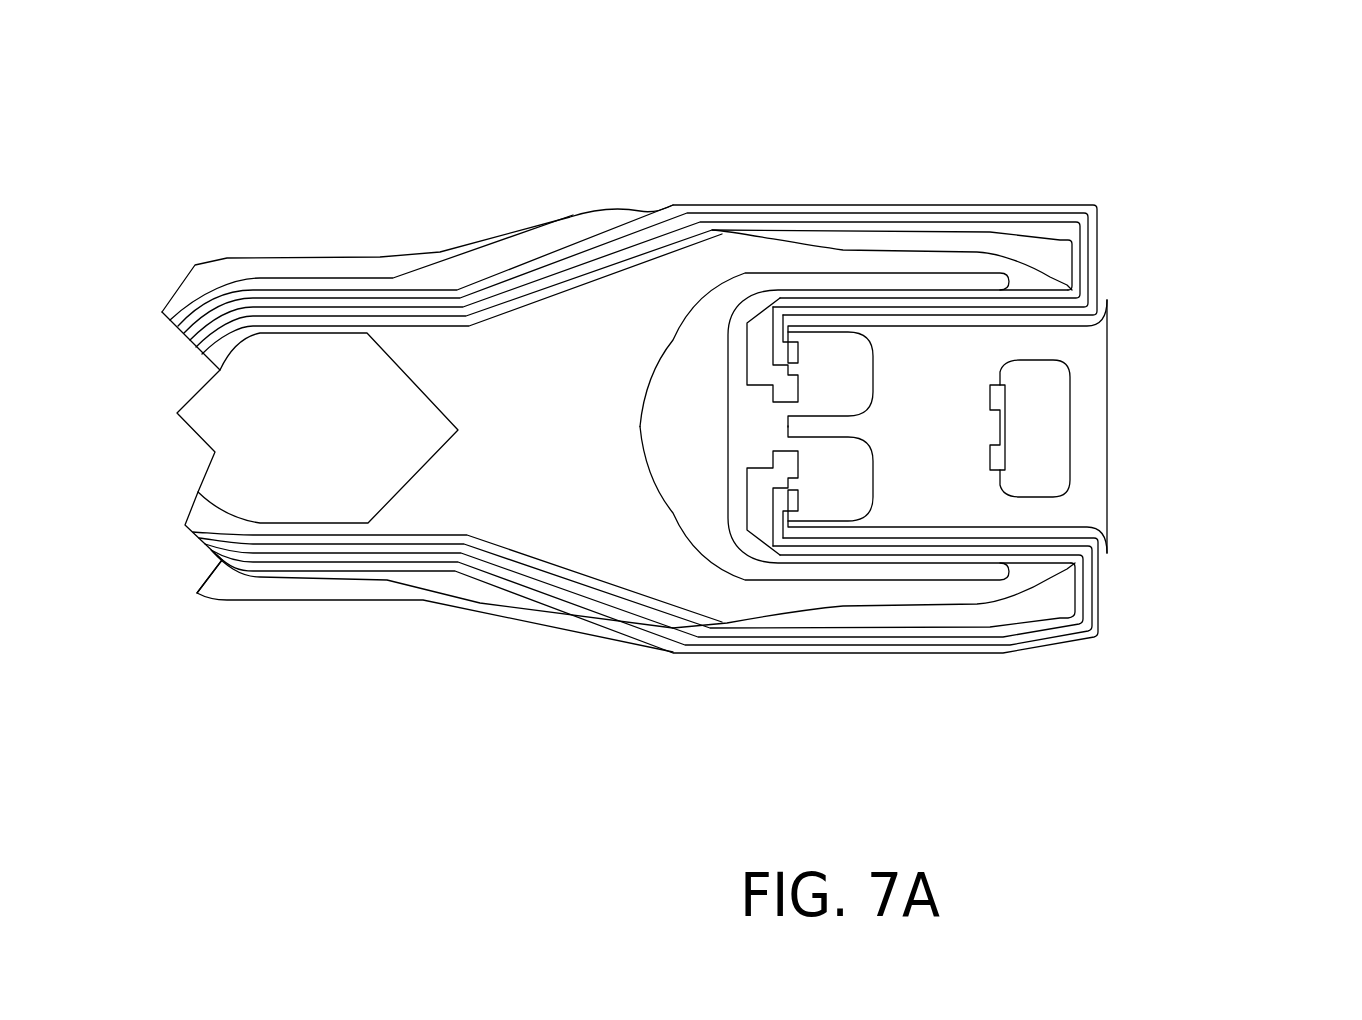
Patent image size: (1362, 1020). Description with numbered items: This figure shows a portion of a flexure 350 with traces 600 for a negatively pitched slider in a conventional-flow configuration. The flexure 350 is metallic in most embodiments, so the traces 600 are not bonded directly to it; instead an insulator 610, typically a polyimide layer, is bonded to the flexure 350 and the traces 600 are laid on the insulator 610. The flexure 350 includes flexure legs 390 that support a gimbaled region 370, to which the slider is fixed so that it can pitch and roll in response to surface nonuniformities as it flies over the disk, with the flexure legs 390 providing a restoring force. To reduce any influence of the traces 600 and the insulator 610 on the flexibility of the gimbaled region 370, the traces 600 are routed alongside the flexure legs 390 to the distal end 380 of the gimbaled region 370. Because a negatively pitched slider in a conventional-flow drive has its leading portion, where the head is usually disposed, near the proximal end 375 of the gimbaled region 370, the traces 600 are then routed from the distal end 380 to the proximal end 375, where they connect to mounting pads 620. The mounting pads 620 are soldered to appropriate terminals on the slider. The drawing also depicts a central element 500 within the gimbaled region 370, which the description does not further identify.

The flexure 350 is at (617, 317).
The insulator 610 is at (478, 265).
The proximal end 375 is at (735, 533).
The traces 600 is at (1097, 268).
The flexure legs 390 is at (927, 257).
The insert 500 is at (763, 427).
The mounting pads 620 is at (800, 500).
The gimbaled region 370 is at (973, 368).
The distal end 380 is at (1060, 508).